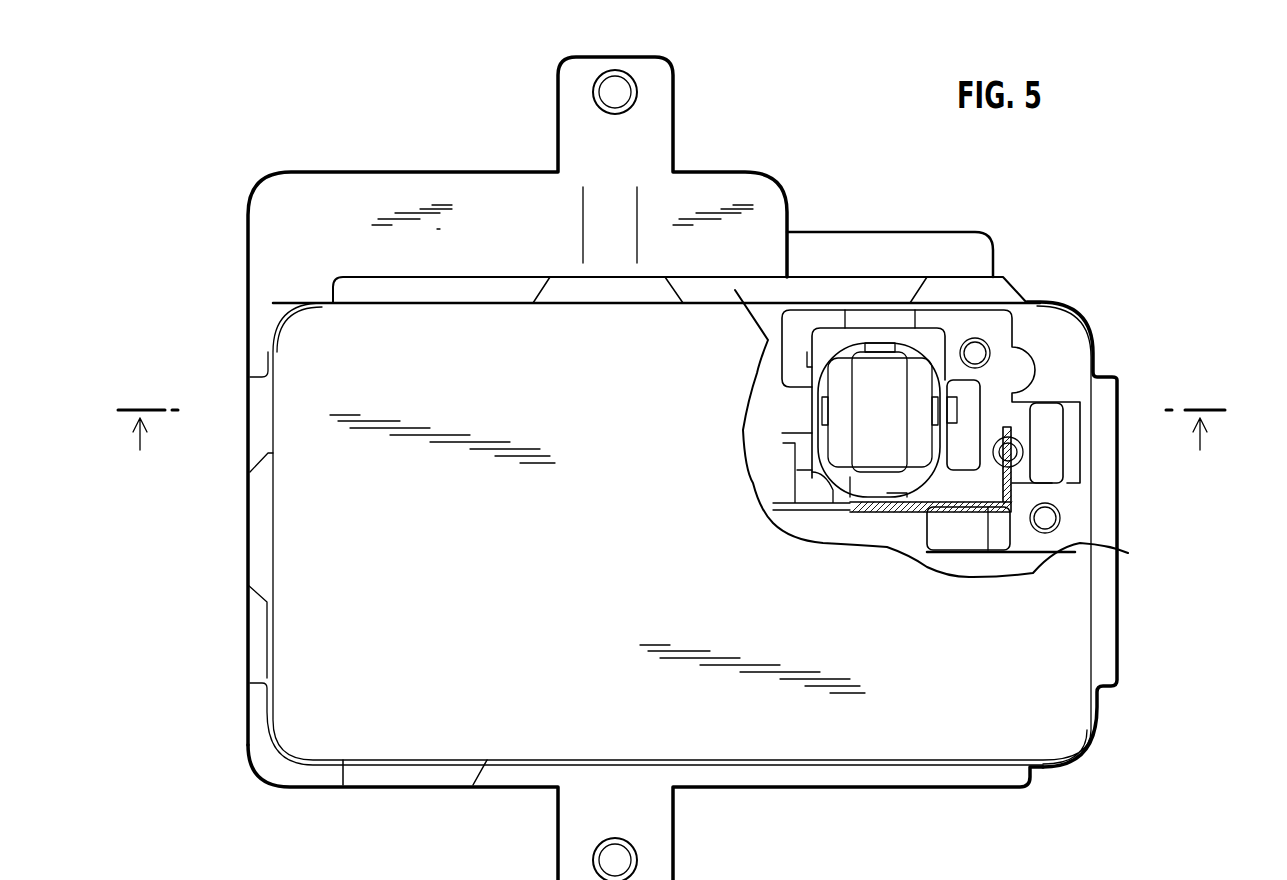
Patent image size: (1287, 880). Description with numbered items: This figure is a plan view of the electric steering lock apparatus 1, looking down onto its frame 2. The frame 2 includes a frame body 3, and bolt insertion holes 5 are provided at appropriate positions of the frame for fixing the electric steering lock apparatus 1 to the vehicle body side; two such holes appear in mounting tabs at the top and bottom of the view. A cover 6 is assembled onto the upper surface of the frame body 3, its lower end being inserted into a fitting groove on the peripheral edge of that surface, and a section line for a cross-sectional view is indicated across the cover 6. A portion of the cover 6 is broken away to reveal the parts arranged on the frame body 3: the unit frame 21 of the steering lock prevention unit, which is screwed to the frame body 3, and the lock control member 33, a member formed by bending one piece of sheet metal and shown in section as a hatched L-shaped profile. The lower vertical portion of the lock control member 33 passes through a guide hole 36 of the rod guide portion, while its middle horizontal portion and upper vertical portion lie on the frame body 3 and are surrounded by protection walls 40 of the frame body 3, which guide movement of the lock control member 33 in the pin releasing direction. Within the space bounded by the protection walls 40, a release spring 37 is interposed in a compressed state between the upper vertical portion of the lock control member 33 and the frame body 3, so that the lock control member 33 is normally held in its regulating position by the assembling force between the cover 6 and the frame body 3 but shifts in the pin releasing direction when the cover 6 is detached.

The electric steering lock apparatus 1 is at (387, 155).
The frame 2 is at (1122, 657).
The frame body 3 is at (1105, 618).
The bolt insertion hole 5 is at (620, 100).
The cover 6 is at (1082, 796).
The unit frame 21 is at (763, 347).
The lock control member 33 is at (1015, 492).
The guide hole 36 is at (905, 477).
The release spring 37 is at (1018, 452).
The protection wall 40 is at (1057, 467).